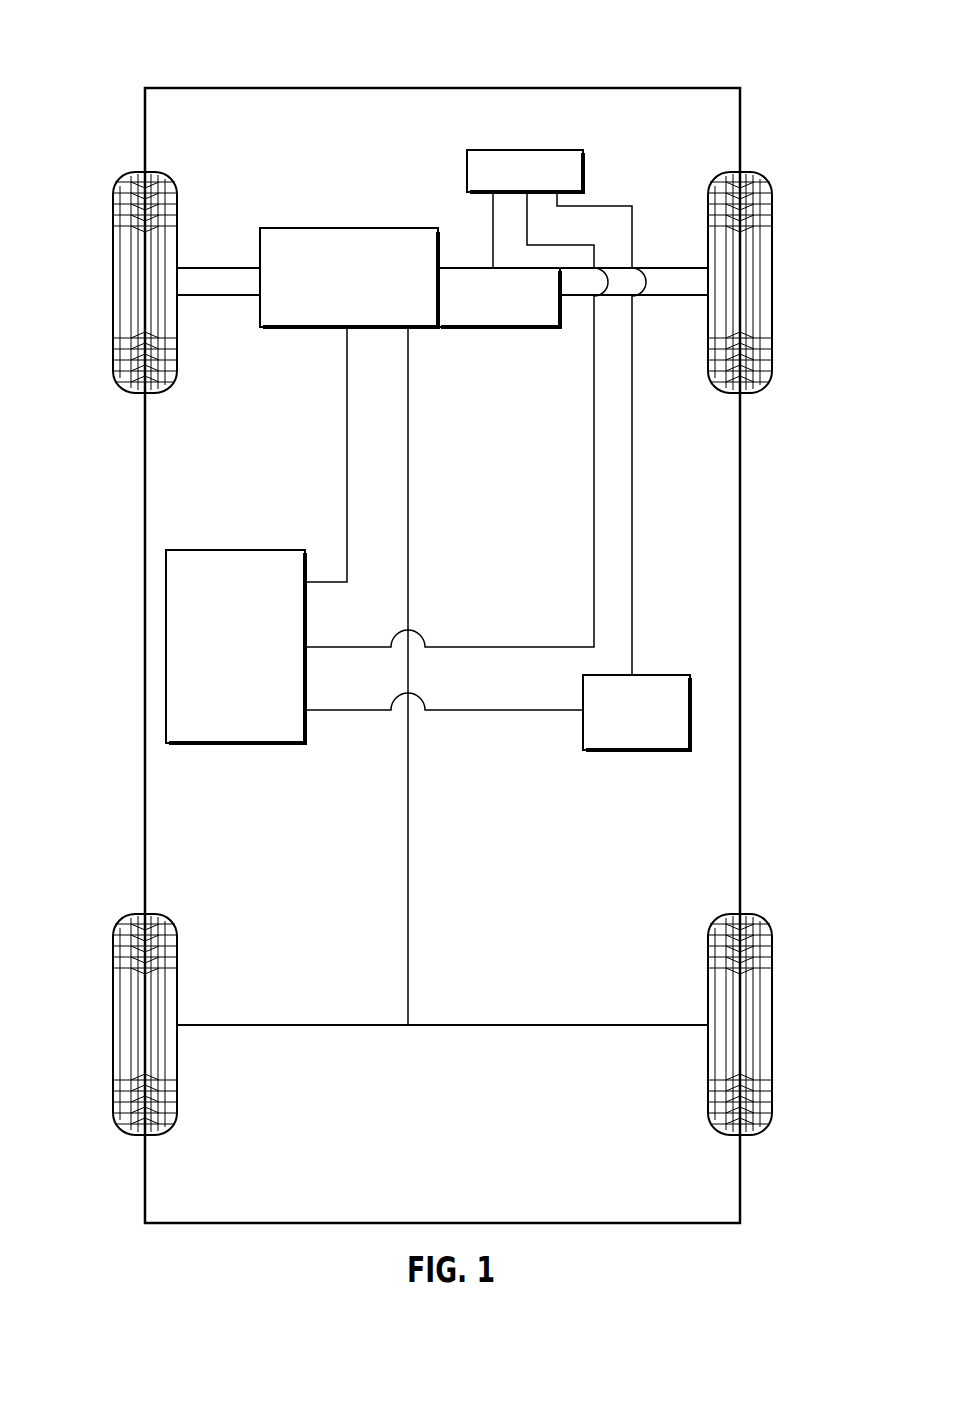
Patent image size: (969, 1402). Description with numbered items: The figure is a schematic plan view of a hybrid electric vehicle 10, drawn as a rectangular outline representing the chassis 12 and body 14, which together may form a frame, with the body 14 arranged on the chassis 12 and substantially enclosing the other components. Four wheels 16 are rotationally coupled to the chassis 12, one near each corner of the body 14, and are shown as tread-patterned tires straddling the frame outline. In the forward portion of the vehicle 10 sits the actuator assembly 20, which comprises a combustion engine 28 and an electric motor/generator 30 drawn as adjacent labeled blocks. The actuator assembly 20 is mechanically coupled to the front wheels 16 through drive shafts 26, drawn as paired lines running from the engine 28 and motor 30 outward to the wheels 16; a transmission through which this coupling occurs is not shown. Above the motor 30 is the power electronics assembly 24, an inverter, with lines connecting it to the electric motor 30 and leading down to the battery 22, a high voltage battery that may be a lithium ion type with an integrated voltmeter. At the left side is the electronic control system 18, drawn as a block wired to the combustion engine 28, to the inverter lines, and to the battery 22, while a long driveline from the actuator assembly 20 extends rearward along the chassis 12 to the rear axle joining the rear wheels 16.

The vehicle 10 is at (764, 47).
The chassis 12 is at (410, 938).
The body 14 is at (143, 735).
The wheels 16 is at (113, 280).
The electronic control system 18 is at (248, 550).
The actuator assembly 20 is at (492, 403).
The battery 22 is at (635, 752).
The power electronics assembly 24 is at (528, 150).
The drive shafts 26 is at (232, 280).
The combustion engine 28 is at (378, 228).
The electric motor/generator 30 is at (499, 328).